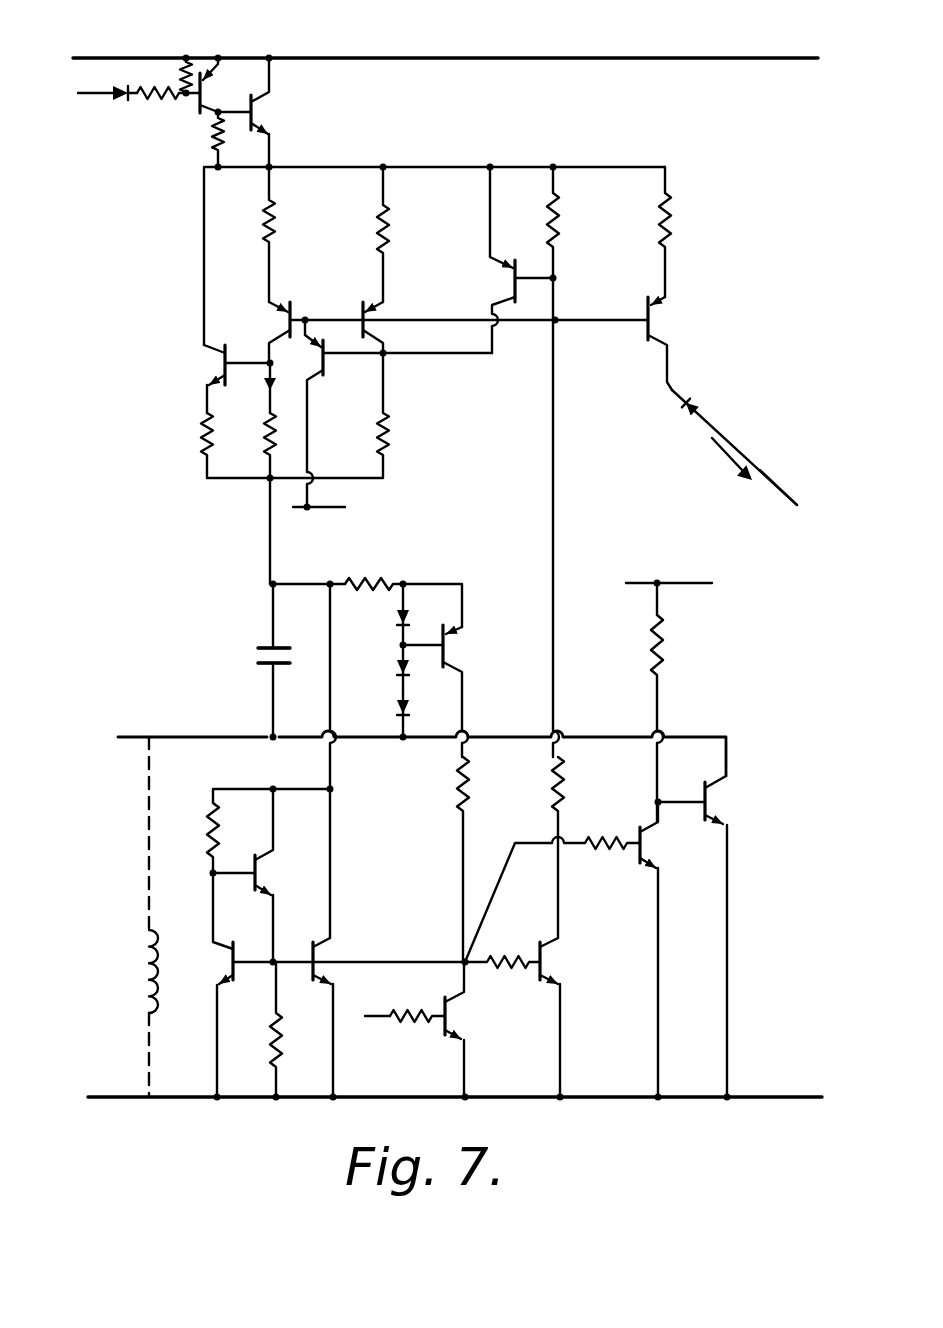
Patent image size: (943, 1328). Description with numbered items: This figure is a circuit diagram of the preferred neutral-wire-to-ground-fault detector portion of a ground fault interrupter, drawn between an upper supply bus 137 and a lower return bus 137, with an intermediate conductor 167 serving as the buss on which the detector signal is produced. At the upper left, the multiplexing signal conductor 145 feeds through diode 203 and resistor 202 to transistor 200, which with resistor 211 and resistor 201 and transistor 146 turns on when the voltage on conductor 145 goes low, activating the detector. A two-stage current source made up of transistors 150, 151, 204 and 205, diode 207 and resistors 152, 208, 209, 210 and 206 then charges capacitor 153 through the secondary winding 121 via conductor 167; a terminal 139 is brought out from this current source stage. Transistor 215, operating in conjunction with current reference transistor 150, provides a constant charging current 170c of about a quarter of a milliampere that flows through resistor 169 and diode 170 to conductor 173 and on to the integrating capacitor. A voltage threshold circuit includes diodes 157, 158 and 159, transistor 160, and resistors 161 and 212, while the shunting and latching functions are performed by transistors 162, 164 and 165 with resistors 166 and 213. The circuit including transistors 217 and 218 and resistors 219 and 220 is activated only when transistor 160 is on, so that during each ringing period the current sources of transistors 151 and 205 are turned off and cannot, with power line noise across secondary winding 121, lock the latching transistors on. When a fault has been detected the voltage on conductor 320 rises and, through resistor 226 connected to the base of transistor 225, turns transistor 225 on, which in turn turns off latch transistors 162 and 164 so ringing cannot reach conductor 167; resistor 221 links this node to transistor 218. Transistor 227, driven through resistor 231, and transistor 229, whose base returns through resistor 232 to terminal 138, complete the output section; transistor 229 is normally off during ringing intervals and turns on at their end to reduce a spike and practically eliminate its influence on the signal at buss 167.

The supply bus line 137 is at (658, 58).
The conductor 167 is at (195, 727).
The resistor 211 is at (179, 66).
The multiplexing signal conductor 145 is at (103, 92).
The diode 203 is at (118, 104).
The resistor 202 is at (154, 104).
The transistor 200 is at (208, 97).
The resistor 201 is at (211, 150).
The transistor 146 is at (257, 117).
The resistor 209 is at (242, 234).
The resistor 208 is at (376, 237).
The transistor 151 is at (296, 298).
The current reference transistor 150 is at (360, 304).
The transistor 204 is at (324, 368).
The output terminal 139 is at (345, 507).
The resistor 152 is at (378, 440).
The transistor 205 is at (222, 362).
The resistor 206 is at (205, 440).
The diode 207 is at (268, 388).
The resistor 210 is at (245, 498).
The transistor 217 is at (513, 283).
The resistor 219 is at (560, 226).
The resistor 169 is at (673, 226).
The transistor 215 is at (656, 321).
The diode 170 is at (682, 402).
The current 170c is at (725, 451).
The conductor 173 is at (772, 450).
The resistor 212 is at (378, 582).
The transistor 160 is at (464, 650).
The diode 157 is at (398, 617).
The diode 158 is at (398, 668).
The diode 159 is at (398, 708).
The capacitor 153 is at (255, 655).
The terminal 138 is at (692, 567).
The resistor 232 is at (663, 639).
The resistor 166 is at (218, 826).
The transistor 164 is at (262, 884).
The transistor 165 is at (231, 962).
The transistor 162 is at (320, 958).
The resistor 213 is at (271, 1050).
The secondary winding 121 is at (140, 968).
The resistor 161 is at (470, 790).
The resistor 220 is at (565, 790).
The resistor 231 is at (596, 848).
The resistor 221 is at (500, 968).
The transistor 218 is at (548, 962).
The conductor 320 is at (378, 1004).
The resistor 226 is at (400, 1026).
The transistor 225 is at (452, 1015).
The transistor 227 is at (650, 848).
The transistor 229 is at (715, 800).